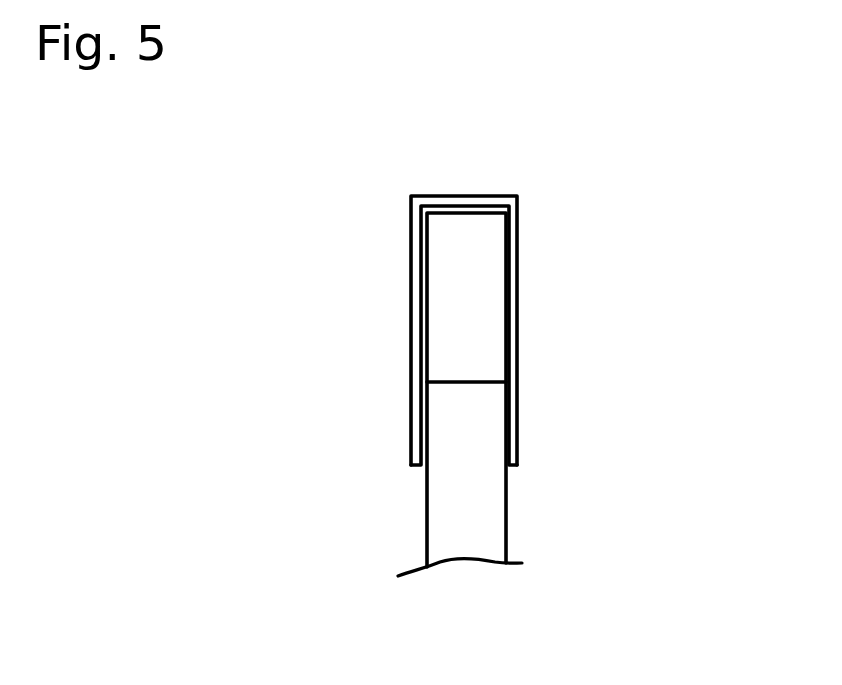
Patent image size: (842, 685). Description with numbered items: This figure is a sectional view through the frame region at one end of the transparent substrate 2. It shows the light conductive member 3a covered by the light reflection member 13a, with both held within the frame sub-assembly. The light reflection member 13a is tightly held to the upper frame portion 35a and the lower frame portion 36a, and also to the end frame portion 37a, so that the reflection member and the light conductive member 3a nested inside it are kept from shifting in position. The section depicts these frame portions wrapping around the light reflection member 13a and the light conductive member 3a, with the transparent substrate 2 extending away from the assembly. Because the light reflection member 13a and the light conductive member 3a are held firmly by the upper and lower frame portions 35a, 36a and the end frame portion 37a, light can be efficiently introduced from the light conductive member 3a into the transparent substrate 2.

The end frame portion 37a is at (476, 198).
The lower frame portion 36a is at (519, 273).
The upper frame portion 35a is at (420, 262).
The light reflection member 13a is at (507, 340).
The light conductive member 3a is at (468, 257).
The transparent substrate 2 is at (468, 521).